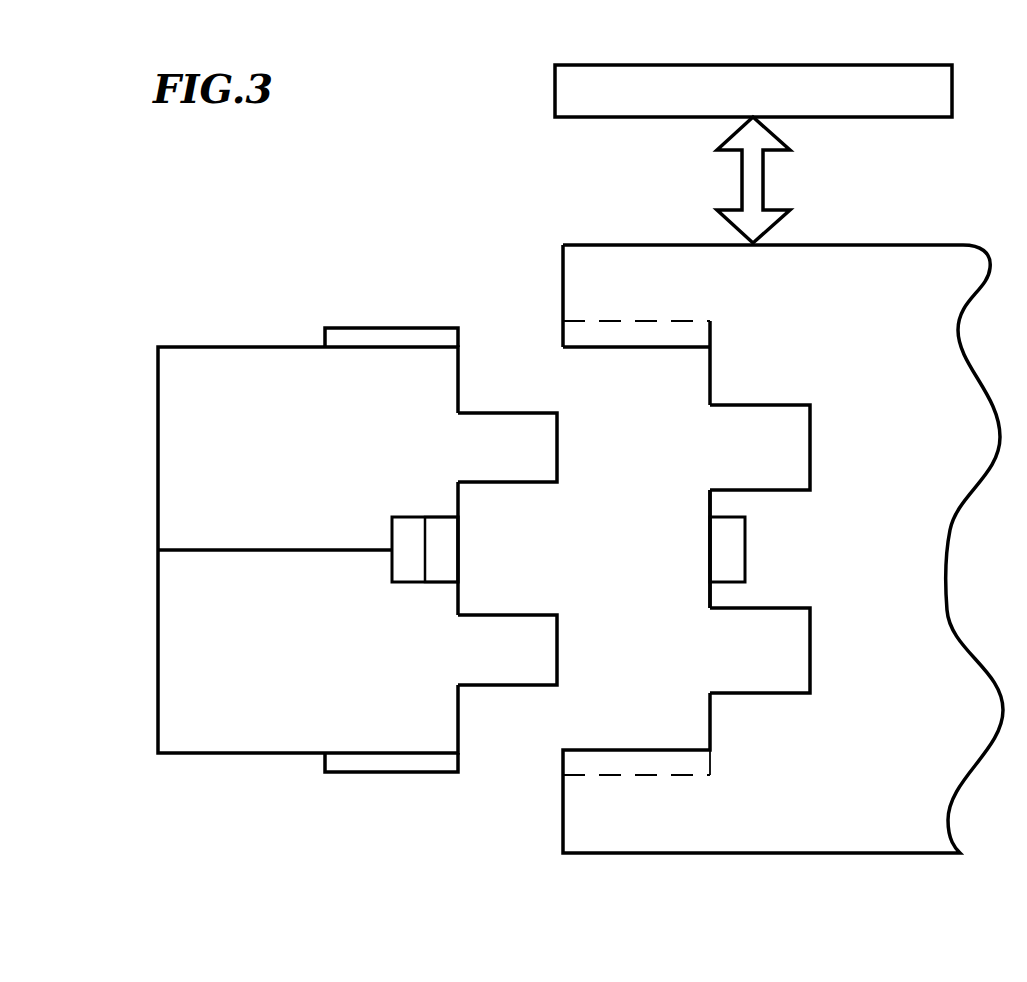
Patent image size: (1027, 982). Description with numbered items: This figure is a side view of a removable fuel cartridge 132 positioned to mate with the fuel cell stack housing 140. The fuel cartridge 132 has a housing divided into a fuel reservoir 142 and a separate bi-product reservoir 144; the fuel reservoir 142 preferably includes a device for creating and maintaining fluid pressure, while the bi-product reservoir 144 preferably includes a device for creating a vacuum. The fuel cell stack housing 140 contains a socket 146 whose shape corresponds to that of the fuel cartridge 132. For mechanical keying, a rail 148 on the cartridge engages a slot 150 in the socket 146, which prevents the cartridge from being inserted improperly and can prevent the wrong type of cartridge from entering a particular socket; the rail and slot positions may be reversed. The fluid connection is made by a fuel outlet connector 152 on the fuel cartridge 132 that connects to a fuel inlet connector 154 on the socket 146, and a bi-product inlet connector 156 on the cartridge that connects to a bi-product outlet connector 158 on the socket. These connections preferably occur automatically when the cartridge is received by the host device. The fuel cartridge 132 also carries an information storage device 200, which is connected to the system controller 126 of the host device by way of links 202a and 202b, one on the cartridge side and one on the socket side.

The system controller 126 is at (905, 62).
The fuel cartridge 132 is at (262, 260).
The fuel cell stack housing 140 is at (883, 840).
The fuel reservoir 142 is at (178, 628).
The bi-product reservoir 144 is at (178, 440).
The socket 146 is at (572, 732).
The rail 148 is at (390, 333).
The slot 150 is at (670, 330).
The fuel outlet connector 152 is at (525, 643).
The fuel inlet connector 154 is at (780, 607).
The bi-product inlet connector 156 is at (528, 447).
The bi-product outlet connector 158 is at (780, 403).
The information storage device 200 is at (400, 515).
The link 202a is at (445, 532).
The link 202b is at (727, 558).